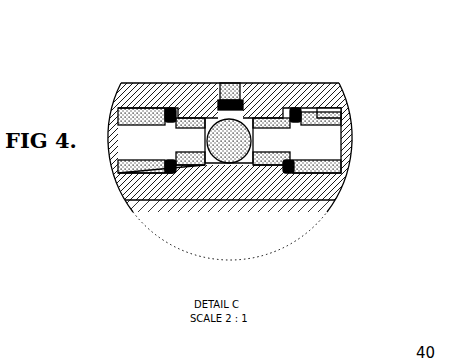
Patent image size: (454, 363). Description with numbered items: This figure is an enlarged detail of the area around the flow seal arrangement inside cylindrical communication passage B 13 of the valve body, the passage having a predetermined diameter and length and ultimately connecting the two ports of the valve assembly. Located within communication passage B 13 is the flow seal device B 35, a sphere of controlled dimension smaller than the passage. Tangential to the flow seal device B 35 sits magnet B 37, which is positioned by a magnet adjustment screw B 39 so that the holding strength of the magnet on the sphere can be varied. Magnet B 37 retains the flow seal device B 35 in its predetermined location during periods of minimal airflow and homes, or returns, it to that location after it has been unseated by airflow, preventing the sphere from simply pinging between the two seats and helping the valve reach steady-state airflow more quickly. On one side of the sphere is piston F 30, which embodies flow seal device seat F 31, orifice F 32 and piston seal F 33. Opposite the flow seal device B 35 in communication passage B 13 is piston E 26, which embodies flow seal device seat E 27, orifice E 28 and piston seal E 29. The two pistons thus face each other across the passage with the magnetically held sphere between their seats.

The communication passage B 13 is at (206, 110).
The piston E 26 is at (344, 107).
The flow seal device seat E 27 is at (258, 172).
The orifice E 28 is at (272, 108).
The piston seal E 29 is at (297, 186).
The piston F 30 is at (117, 101).
The flow seal device seat F 31 is at (191, 172).
The orifice F 32 is at (182, 106).
The piston seal F 33 is at (160, 184).
The flow seal device B 35 is at (219, 160).
The magnet B 37 is at (252, 98).
The magnet adjustment screw B 39 is at (229, 73).